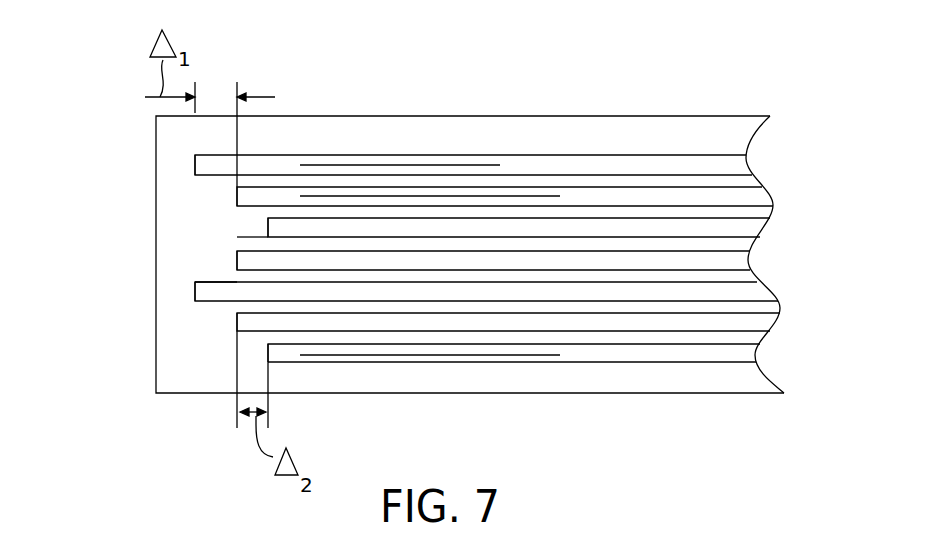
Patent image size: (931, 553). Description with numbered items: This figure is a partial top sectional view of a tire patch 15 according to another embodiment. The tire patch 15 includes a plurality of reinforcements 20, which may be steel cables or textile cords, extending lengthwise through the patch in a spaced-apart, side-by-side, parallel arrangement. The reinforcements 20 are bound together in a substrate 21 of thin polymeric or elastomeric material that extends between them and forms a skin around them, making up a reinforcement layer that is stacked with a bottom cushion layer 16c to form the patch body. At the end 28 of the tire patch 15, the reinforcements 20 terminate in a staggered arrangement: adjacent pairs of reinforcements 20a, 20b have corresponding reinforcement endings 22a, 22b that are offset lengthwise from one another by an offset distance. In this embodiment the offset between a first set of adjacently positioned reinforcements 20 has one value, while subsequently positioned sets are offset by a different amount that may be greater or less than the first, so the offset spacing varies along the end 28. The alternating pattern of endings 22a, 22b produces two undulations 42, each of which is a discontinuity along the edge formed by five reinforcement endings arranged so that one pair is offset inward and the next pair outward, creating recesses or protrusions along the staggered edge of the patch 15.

The tire patch 15 is at (620, 47).
The bottom cushion layer 16c is at (720, 373).
The reinforcements 20 is at (673, 162).
The first reinforcement of adjacent pair 20a is at (378, 188).
The second reinforcement of adjacent pair 20b is at (318, 167).
The substrate 21 is at (748, 180).
The first reinforcement ending 22a is at (237, 197).
The second reinforcement ending 22b is at (195, 165).
The end of tire patch 28 is at (148, 366).
The undulation 42 is at (245, 235).